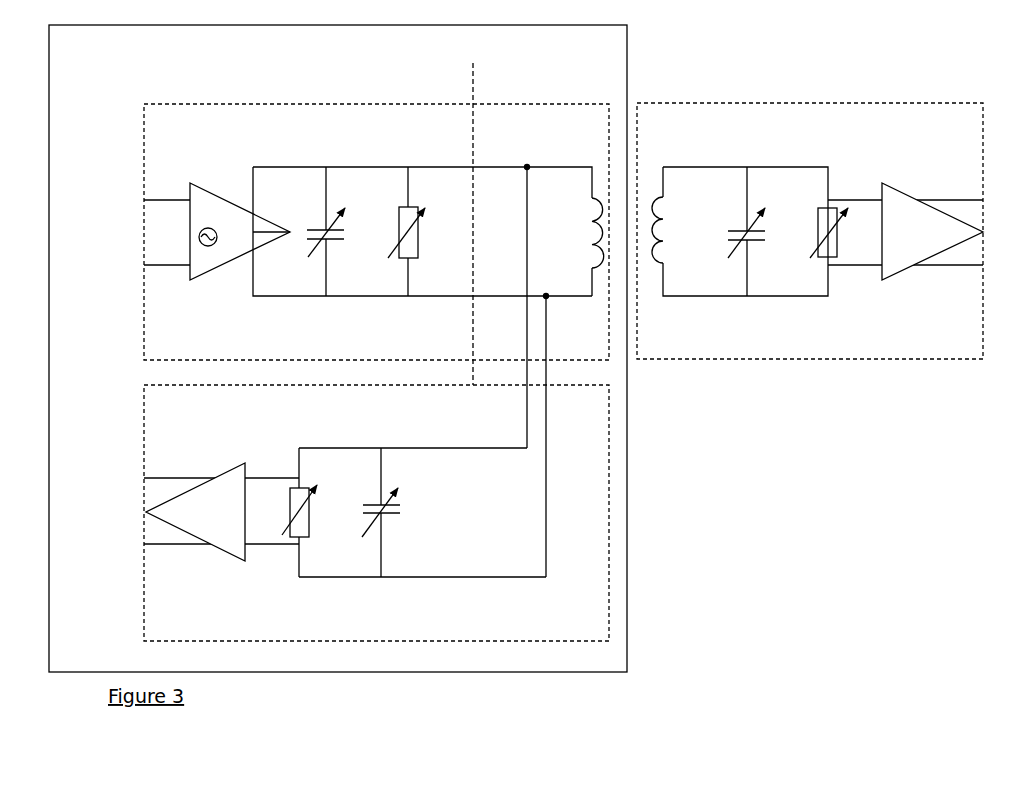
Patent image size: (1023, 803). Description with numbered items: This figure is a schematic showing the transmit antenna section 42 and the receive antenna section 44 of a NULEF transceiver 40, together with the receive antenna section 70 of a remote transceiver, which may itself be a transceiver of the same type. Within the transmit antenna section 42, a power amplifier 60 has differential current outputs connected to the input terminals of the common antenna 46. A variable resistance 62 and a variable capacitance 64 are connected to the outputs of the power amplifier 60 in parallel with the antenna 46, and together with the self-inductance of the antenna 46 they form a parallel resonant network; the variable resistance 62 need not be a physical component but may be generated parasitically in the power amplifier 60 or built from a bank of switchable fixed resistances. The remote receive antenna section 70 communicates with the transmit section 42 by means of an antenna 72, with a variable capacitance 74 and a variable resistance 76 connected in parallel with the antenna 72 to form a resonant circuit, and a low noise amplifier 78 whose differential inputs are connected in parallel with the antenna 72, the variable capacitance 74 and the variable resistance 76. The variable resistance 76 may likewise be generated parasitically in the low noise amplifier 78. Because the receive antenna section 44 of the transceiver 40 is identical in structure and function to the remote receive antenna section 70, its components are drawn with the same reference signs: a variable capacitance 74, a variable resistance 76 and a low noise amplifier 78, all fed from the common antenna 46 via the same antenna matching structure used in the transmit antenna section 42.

The transceiver 40 is at (640, 471).
The transmit antenna section 42 is at (289, 87).
The receive antenna section 44 is at (128, 425).
The antenna 46 is at (588, 240).
The power amplifier 60 is at (256, 247).
The variable resistance 62 is at (409, 238).
The variable capacitance 64 is at (336, 242).
The receive antenna section of remote transceiver 70 is at (680, 87).
The antenna 72 is at (666, 257).
The variable capacitance 74 is at (376, 503).
The variable resistance 76 is at (299, 507).
The low noise amplifier 78 is at (229, 543).